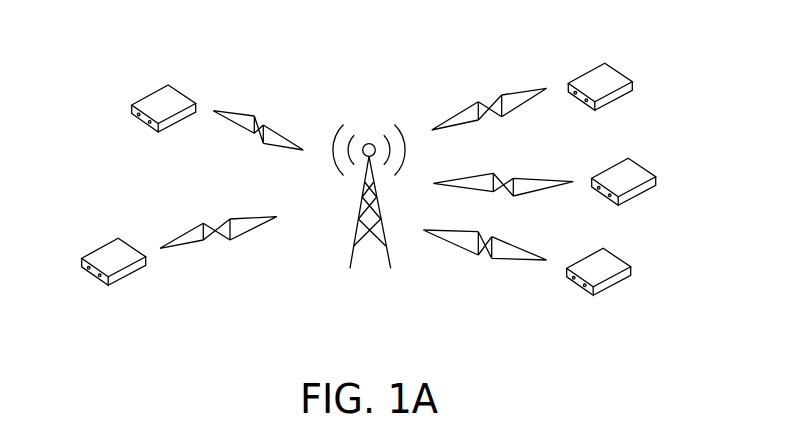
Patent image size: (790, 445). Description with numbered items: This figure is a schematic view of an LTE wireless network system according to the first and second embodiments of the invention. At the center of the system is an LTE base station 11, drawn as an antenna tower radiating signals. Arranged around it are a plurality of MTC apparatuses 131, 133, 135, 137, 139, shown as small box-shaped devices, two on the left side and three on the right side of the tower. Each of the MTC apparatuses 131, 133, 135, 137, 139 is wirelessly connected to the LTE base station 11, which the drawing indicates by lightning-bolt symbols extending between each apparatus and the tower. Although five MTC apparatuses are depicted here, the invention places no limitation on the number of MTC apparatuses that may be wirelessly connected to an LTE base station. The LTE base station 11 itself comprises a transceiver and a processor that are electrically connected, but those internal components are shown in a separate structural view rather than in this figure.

The LTE base station 11 is at (353, 240).
The MTC apparatus 131 is at (130, 110).
The MTC apparatus 133 is at (82, 263).
The MTC apparatus 135 is at (633, 82).
The MTC apparatus 137 is at (655, 178).
The MTC apparatus 139 is at (630, 268).